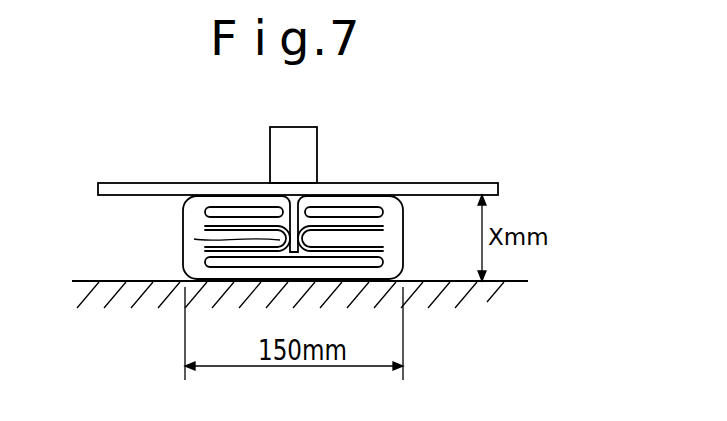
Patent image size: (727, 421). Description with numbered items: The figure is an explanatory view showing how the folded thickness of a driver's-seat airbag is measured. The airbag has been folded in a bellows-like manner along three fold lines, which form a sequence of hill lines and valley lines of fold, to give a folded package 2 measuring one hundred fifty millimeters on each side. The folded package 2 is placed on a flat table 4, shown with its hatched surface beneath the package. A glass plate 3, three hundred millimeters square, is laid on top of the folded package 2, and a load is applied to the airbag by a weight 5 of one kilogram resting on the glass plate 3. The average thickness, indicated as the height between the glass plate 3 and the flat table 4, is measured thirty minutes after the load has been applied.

The folded package 2 is at (404, 256).
The glass plate 3 is at (446, 184).
The flat table 4 is at (490, 300).
The weight 5 is at (308, 162).